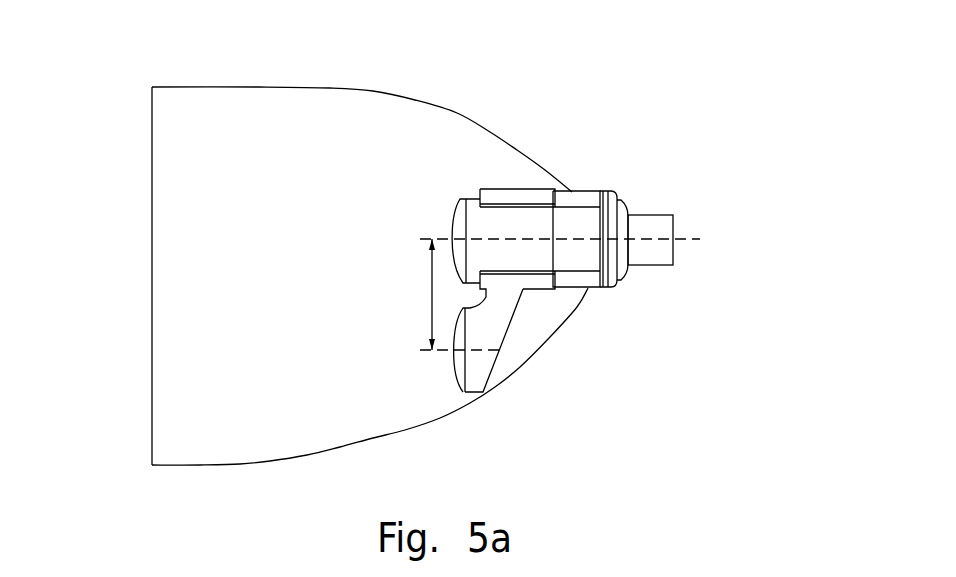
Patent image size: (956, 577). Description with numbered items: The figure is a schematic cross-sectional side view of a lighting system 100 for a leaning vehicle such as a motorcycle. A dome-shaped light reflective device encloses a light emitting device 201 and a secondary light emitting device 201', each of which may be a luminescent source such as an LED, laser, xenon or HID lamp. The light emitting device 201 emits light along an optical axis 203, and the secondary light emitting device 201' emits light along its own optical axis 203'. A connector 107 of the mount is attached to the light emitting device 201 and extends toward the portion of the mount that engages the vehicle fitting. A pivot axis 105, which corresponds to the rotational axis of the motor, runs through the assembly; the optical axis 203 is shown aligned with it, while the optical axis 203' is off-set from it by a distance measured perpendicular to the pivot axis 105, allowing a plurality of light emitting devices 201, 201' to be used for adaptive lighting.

The lighting system 100 is at (135, 30).
The light emitting device 201 is at (421, 216).
The secondary light emitting device 201' is at (416, 369).
The optical axis 203 is at (521, 217).
The optical axis 203' is at (418, 373).
The connector 107 is at (577, 215).
The pivot axis 105 is at (703, 239).